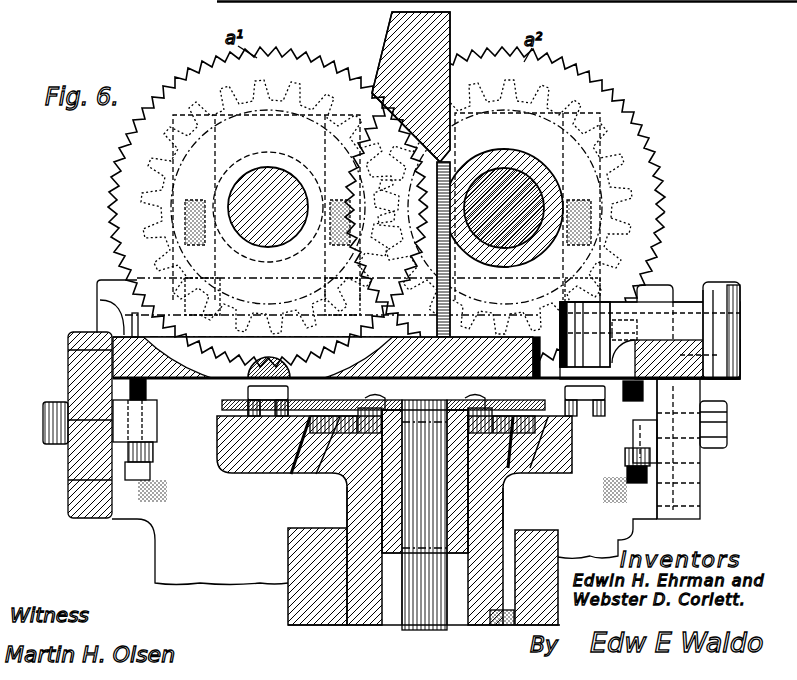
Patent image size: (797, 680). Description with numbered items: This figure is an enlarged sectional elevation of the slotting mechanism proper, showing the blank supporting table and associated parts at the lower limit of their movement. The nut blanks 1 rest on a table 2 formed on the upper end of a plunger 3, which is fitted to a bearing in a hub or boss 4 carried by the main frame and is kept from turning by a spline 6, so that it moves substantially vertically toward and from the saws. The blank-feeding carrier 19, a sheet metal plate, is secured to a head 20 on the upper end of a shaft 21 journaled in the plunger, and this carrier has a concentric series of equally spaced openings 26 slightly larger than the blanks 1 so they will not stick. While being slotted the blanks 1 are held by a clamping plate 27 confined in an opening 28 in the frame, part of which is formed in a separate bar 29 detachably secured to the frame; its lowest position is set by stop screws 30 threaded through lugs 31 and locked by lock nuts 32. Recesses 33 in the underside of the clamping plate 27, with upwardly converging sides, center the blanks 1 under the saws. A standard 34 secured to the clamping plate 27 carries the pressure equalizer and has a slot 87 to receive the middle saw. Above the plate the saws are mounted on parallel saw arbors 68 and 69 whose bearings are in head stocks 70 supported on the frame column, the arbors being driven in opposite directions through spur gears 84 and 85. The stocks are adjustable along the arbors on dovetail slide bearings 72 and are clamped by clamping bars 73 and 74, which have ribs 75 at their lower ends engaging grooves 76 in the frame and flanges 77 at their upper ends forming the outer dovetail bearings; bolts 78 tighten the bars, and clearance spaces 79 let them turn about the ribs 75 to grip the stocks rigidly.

The blanks 1 is at (222, 417).
The table 2 is at (250, 458).
The plunger 3 is at (348, 509).
The hub or boss 4 is at (290, 561).
The spline 6 is at (502, 610).
The blank-feeding carrier 19 is at (365, 396).
The head 20 is at (432, 424).
The shaft 21 is at (410, 620).
The openings 26 is at (288, 398).
The clamping plate 27 is at (445, 364).
The opening 28 is at (125, 318).
The bar 29 is at (68, 395).
The screws 30 is at (148, 390).
The lugs 31 is at (157, 420).
The lock nuts 32 is at (736, 428).
The recesses 33 is at (256, 372).
The standard 34 is at (450, 22).
The saw arbor 68 is at (505, 176).
The saw arbor 69 is at (270, 170).
The head stocks 70 is at (262, 105).
The dovetail slide bearings 72 is at (185, 300).
The clamping bar 73 is at (97, 290).
The clamping bar 74 is at (675, 296).
The ribs 75 is at (152, 444).
The grooves 76 is at (152, 464).
The flanges 77 is at (388, 206).
The bolts 78 is at (70, 334).
The clearance spaces 79 is at (100, 300).
The spur gear 84 is at (540, 88).
The spur gear 85 is at (292, 80).
The slot 87 is at (375, 72).